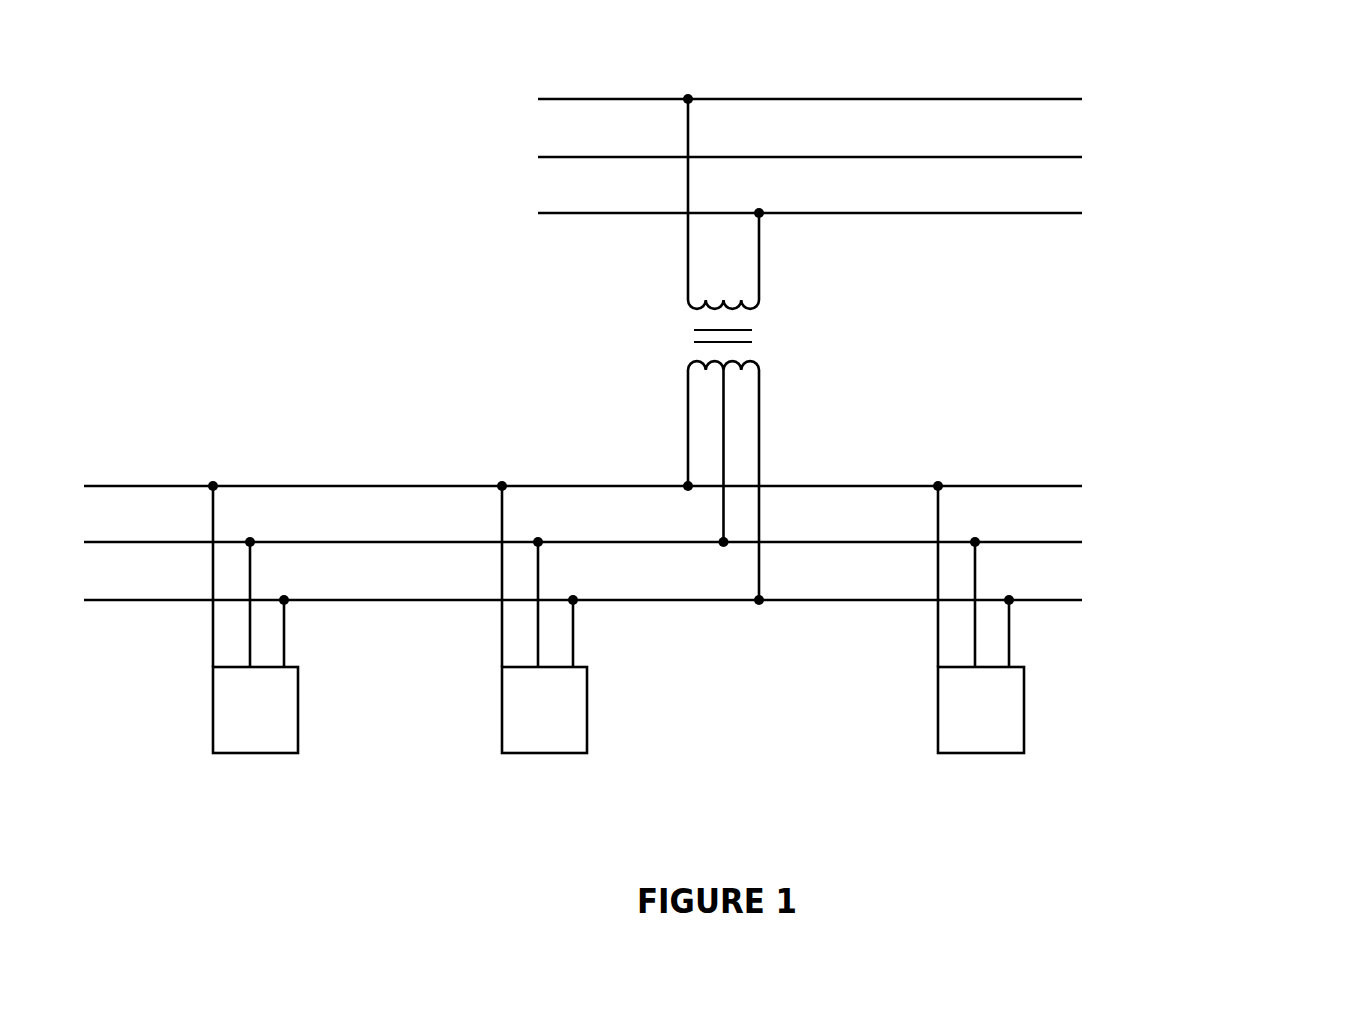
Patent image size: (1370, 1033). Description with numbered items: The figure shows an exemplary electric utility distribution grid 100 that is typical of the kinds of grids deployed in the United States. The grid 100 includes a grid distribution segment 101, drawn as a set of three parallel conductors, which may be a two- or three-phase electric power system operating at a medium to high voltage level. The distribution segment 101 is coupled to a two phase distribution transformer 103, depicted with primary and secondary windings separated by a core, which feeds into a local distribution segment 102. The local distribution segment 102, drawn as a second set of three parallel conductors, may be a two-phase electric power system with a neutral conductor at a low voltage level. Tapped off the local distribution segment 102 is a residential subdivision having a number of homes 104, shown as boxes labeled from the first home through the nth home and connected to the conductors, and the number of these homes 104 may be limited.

The electric utility distribution grid 100 is at (1273, 66).
The grid distribution segment 101 is at (1093, 92).
The local distribution segment 102 is at (1085, 483).
The two phase distribution transformer 103 is at (772, 338).
The homes 104 is at (1055, 758).